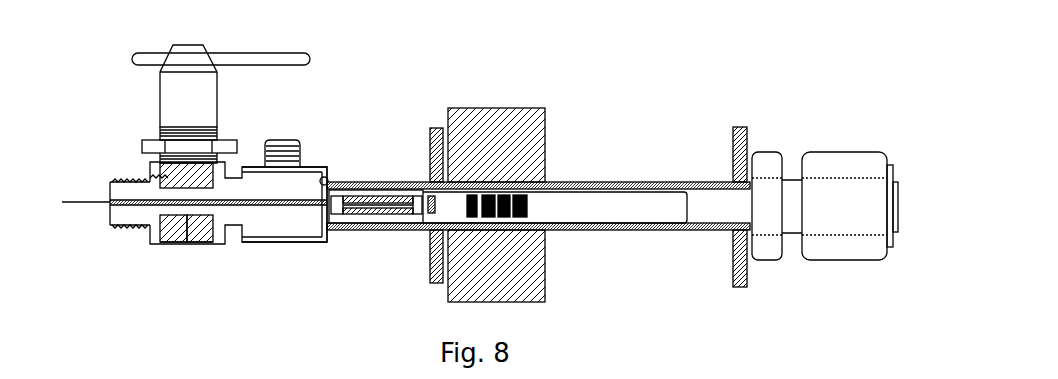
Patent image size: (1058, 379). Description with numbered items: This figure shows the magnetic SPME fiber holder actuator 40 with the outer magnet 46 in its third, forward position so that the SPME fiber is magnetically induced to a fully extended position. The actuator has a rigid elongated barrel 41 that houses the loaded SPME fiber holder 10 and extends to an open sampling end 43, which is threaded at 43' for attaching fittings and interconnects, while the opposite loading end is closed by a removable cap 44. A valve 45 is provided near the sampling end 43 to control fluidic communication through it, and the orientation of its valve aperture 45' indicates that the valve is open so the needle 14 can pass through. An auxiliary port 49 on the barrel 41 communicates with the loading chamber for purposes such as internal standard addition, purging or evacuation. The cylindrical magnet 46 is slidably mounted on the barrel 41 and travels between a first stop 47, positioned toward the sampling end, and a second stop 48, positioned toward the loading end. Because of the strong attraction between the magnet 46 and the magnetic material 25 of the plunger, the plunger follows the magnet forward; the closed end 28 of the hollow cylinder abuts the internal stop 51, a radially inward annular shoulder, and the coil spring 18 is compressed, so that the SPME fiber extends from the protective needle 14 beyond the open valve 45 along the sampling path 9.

The magnetic SPME fiber holder actuator 40 is at (622, 58).
The fluid line 9 is at (92, 200).
The sampling end 43 is at (112, 222).
The threaded sampling end 43' is at (126, 159).
The needle 14 is at (270, 212).
The valve 45 is at (212, 104).
The valve aperture 45' is at (178, 259).
The auxiliary port 49 is at (282, 140).
The closed end 28 is at (320, 210).
The internal stop 51 is at (328, 180).
The barrel 41 is at (673, 181).
The spring 18 is at (393, 212).
The SPME fiber holder 10 is at (618, 208).
The magnetic material 25 is at (530, 206).
The first stop 47 is at (430, 138).
The magnet 46 is at (493, 108).
The second stop 48 is at (750, 134).
The removable cap 44 is at (838, 152).